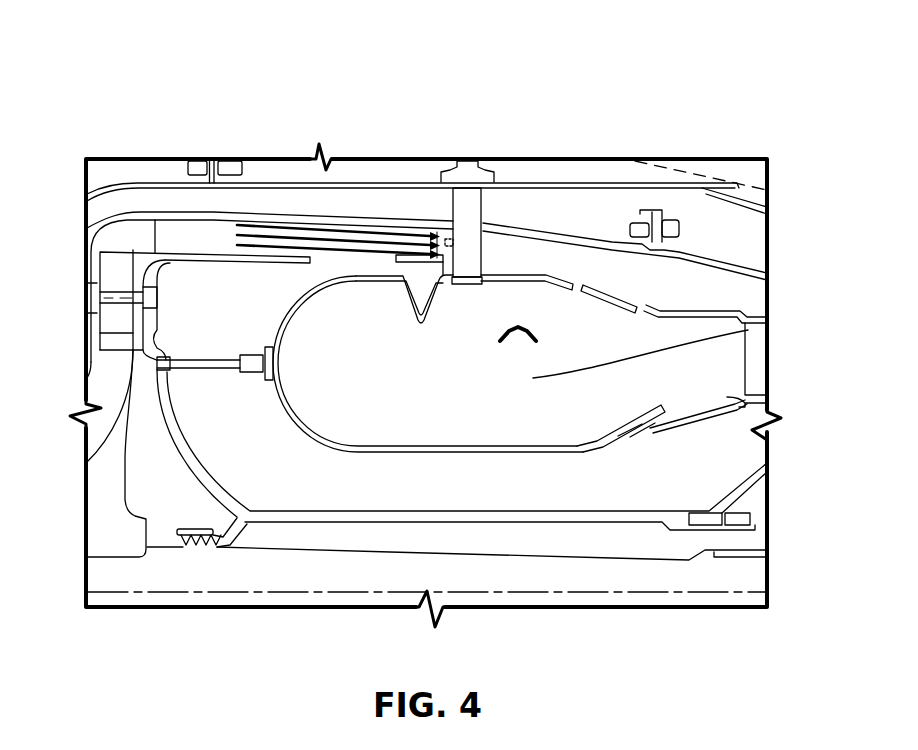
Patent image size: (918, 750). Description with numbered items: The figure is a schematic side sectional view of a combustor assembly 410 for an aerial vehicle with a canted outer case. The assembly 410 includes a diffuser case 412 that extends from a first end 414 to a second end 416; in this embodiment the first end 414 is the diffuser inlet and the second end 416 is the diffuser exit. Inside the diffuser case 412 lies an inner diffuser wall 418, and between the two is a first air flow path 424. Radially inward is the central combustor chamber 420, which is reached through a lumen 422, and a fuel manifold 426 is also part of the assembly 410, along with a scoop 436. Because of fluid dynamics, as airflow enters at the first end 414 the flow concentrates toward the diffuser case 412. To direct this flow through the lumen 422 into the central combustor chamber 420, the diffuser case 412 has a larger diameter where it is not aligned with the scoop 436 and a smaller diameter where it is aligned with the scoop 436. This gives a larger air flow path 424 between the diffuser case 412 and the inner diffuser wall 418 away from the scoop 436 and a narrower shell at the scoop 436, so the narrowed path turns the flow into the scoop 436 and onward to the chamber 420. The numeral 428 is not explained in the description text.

The assembly 410 is at (106, 72).
The diffuser case 412 is at (302, 213).
The first end 414 is at (152, 212).
The second end 416 is at (564, 233).
The inner diffuser wall 418 is at (519, 277).
The central combustor chamber 420 is at (745, 323).
The lumen 422 is at (398, 282).
The first air flow path 424 is at (248, 234).
The fuel manifold 426 is at (473, 248).
The bore 428 is at (457, 243).
The scoop 436 is at (439, 253).